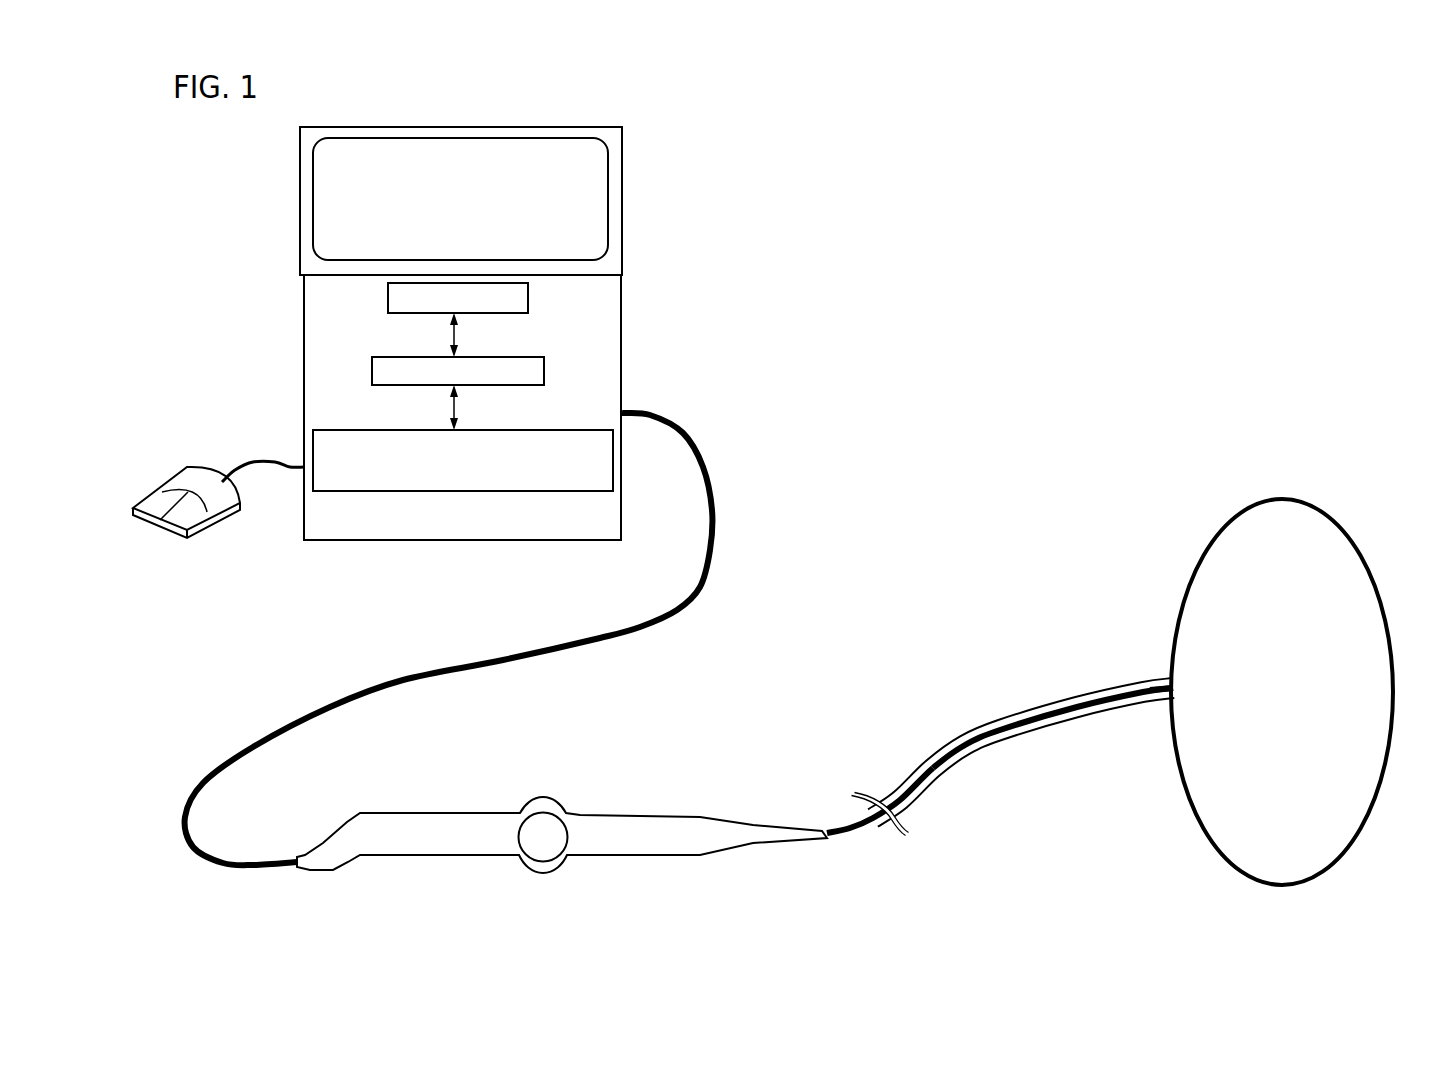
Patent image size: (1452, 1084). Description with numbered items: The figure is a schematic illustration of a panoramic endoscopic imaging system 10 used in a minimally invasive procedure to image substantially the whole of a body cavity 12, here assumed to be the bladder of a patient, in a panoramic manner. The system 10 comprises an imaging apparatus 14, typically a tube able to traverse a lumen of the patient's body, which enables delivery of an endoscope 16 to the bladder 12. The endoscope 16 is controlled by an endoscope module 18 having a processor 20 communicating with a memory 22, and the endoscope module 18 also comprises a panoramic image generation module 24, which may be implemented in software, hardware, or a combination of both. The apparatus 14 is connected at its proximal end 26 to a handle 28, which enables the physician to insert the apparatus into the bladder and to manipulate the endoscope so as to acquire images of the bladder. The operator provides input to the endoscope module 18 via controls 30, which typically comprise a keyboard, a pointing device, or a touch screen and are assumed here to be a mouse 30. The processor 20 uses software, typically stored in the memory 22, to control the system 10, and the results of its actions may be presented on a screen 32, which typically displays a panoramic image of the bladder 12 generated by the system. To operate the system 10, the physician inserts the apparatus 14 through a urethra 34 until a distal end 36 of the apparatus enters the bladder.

The panoramic endoscopic imaging system 10 is at (222, 352).
The body cavity 12 is at (1284, 708).
The imaging apparatus 14 is at (1022, 712).
The endoscope 16 is at (855, 659).
The endoscope module 18 is at (621, 497).
The processor 20 is at (544, 368).
The memory 22 is at (528, 305).
The panoramic image generation module 24 is at (613, 443).
The proximal end 26 is at (814, 786).
The handle 28 is at (613, 813).
The controls 30 is at (192, 535).
The screen 32 is at (622, 227).
The urethra 34 is at (952, 768).
The distal end 36 is at (1177, 690).